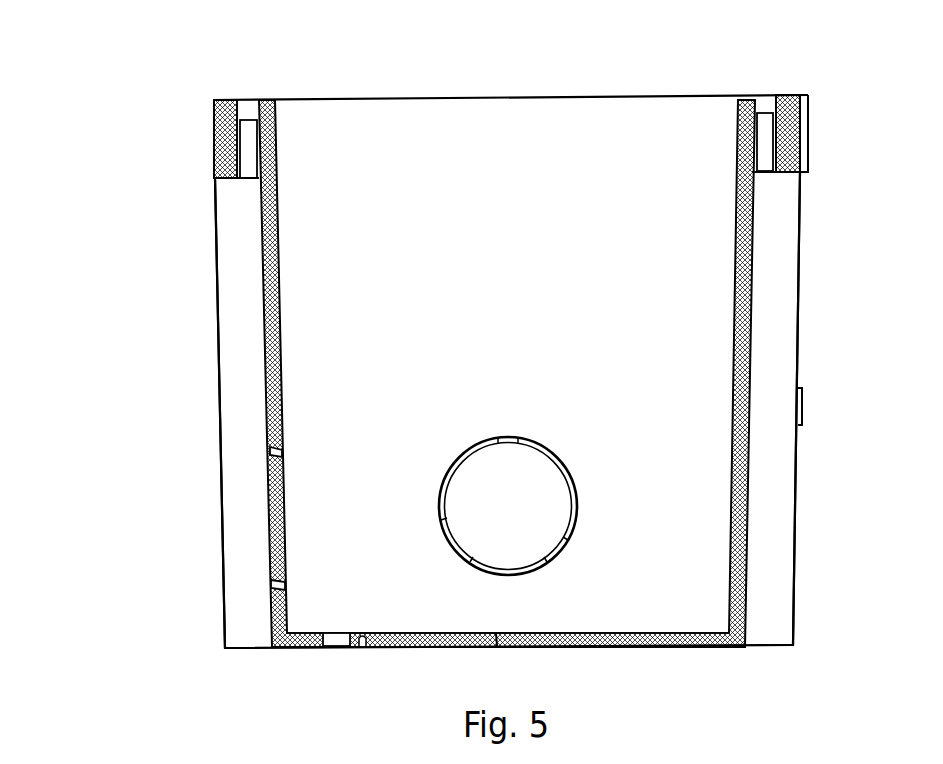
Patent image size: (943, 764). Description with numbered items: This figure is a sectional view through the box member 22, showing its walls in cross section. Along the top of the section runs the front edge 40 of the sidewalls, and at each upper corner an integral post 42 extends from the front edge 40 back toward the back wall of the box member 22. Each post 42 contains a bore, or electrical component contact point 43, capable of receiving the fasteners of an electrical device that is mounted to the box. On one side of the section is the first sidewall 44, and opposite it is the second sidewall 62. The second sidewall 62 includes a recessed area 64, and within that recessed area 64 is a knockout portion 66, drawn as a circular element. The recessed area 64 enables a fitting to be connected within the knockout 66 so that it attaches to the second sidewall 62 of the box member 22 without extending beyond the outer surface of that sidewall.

The box member 22 is at (168, 192).
The front edge 40 is at (560, 97).
The integral posts 42 is at (218, 142).
The electrical component contact points 43 is at (247, 133).
The first sidewall 44 is at (798, 365).
The second sidewall 62 is at (271, 400).
The recessed area 64 is at (258, 509).
The knockout portion 66 is at (282, 513).